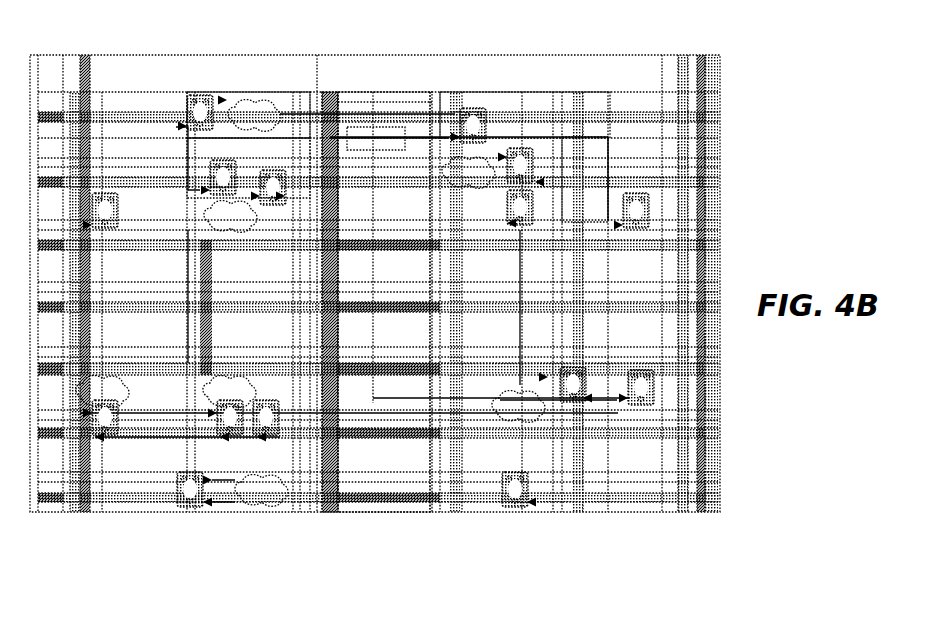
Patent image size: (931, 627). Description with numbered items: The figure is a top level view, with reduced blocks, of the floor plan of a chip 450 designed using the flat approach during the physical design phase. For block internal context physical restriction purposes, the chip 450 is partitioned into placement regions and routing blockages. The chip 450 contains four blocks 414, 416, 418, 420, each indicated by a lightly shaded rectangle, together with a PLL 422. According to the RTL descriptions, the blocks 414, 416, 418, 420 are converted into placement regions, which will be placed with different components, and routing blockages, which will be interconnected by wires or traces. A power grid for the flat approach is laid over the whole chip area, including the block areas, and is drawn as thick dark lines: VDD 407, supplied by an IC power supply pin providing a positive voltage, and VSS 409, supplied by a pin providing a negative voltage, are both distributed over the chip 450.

The block 414 is at (136, 132).
The PLL 422 is at (382, 125).
The block 416 is at (600, 134).
The VDD 407 is at (338, 292).
The VSS 409 is at (430, 314).
The block 418 is at (165, 487).
The block 420 is at (644, 485).
The chip 450 is at (819, 501).